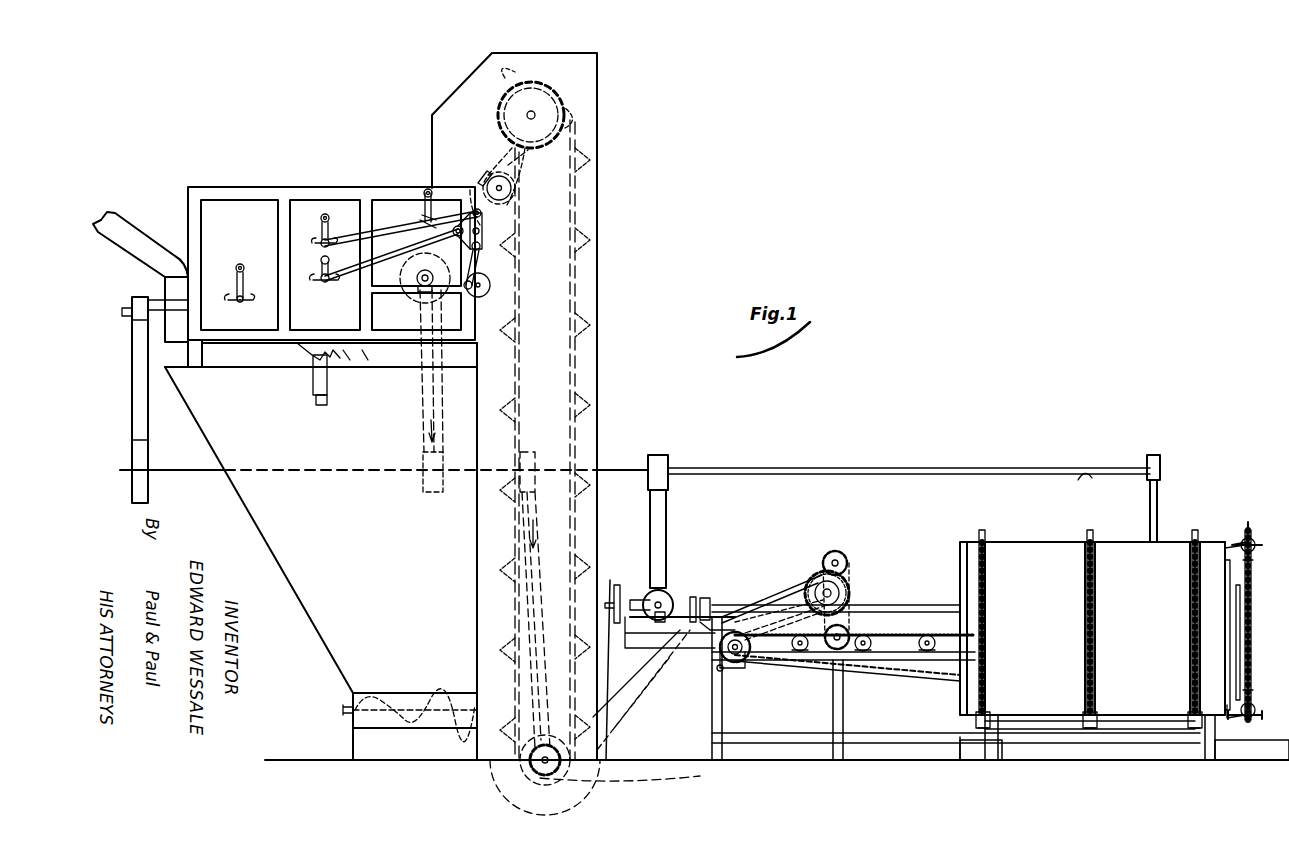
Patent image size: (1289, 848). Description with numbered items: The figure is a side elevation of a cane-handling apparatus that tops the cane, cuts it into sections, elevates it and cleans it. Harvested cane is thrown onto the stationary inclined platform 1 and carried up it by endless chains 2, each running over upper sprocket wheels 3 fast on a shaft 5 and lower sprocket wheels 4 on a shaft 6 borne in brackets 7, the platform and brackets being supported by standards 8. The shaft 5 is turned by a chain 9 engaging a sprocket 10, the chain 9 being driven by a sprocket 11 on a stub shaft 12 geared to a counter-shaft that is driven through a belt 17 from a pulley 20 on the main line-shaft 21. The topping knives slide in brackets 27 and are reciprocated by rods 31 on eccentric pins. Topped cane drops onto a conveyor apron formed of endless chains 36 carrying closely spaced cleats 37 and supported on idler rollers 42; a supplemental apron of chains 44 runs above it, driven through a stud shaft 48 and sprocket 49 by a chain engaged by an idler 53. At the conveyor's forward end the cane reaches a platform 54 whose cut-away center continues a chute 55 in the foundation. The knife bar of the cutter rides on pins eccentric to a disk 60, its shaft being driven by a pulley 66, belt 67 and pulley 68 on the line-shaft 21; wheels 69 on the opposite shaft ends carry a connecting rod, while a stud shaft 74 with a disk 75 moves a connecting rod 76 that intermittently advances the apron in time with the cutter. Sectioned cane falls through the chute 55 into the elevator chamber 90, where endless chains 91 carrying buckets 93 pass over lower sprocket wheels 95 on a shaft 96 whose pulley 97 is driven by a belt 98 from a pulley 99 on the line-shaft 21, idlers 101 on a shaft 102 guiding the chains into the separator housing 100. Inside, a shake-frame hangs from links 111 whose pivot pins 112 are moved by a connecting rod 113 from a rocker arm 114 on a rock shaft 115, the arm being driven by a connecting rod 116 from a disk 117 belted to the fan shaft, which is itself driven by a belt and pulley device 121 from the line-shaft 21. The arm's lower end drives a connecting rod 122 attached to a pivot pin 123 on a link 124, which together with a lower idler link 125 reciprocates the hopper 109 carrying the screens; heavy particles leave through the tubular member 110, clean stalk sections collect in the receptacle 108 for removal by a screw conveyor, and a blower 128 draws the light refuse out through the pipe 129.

The inclined platform 1 is at (1035, 628).
The endless chains 2 is at (978, 572).
The upper sprocket wheels 3 is at (984, 532).
The lower sprocket wheels 4 is at (980, 735).
The shaft 5 is at (1252, 548).
The shaft 6 is at (1050, 730).
The brackets 7 is at (990, 728).
The standards 8 is at (978, 745).
The chain 9 is at (1252, 608).
The sprocket 10 is at (1252, 530).
The sprocket 11 is at (1262, 714).
The stub shaft 12 is at (1255, 705).
The belt 17 is at (1158, 495).
The pulley 20 is at (1158, 455).
The line-shaft 21 is at (1005, 467).
The bracket 27 is at (1226, 610).
The rod 31 is at (1237, 660).
The endless chains 36 is at (918, 678).
The cleats or bars 37 is at (870, 672).
The idler rollers 42 is at (928, 632).
The chains 44 is at (786, 580).
The stud shaft 48 is at (833, 592).
The sprocket 49 is at (847, 585).
The idler 53 is at (843, 553).
The platform 54 is at (715, 630).
The chute 55 is at (655, 690).
The disk 60 is at (697, 600).
The pulley 66 is at (668, 585).
The belt 67 is at (668, 520).
The pulley 68 is at (668, 458).
The wheels 69 is at (617, 585).
The stud shaft 74 is at (670, 598).
The disk 75 is at (652, 594).
The connecting rod 76 is at (712, 605).
The elevator chamber 90 is at (598, 335).
The endless chains 91 is at (570, 278).
The buckets 93 is at (590, 222).
The lower sprocket wheels 95 is at (525, 775).
The shaft 96 is at (542, 764).
The pulley 97 is at (633, 775).
The belt 98 is at (540, 520).
The pulley 99 is at (540, 470).
The separator housing 100 is at (307, 187).
The idlers 101 is at (490, 175).
The shaft 102 is at (478, 183).
The receptacle 108 is at (321, 563).
The hopper 109 is at (297, 348).
The tubular member 110 is at (313, 390).
The links 111 is at (320, 220).
The pivot pins 112 is at (316, 243).
The connecting rod 113 is at (424, 216).
The rocker arm 114 is at (480, 222).
The rock shaft 115 is at (479, 232).
The connecting rod 116 is at (474, 262).
The disk 117 is at (491, 285).
The belt and pulley device 121 is at (423, 468).
The connecting rod 122 is at (388, 270).
The pivot pin 123 is at (325, 283).
The link 124 is at (322, 268).
The lower idler link 125 is at (236, 289).
The blower 128 is at (178, 325).
The pipe 129 is at (126, 215).